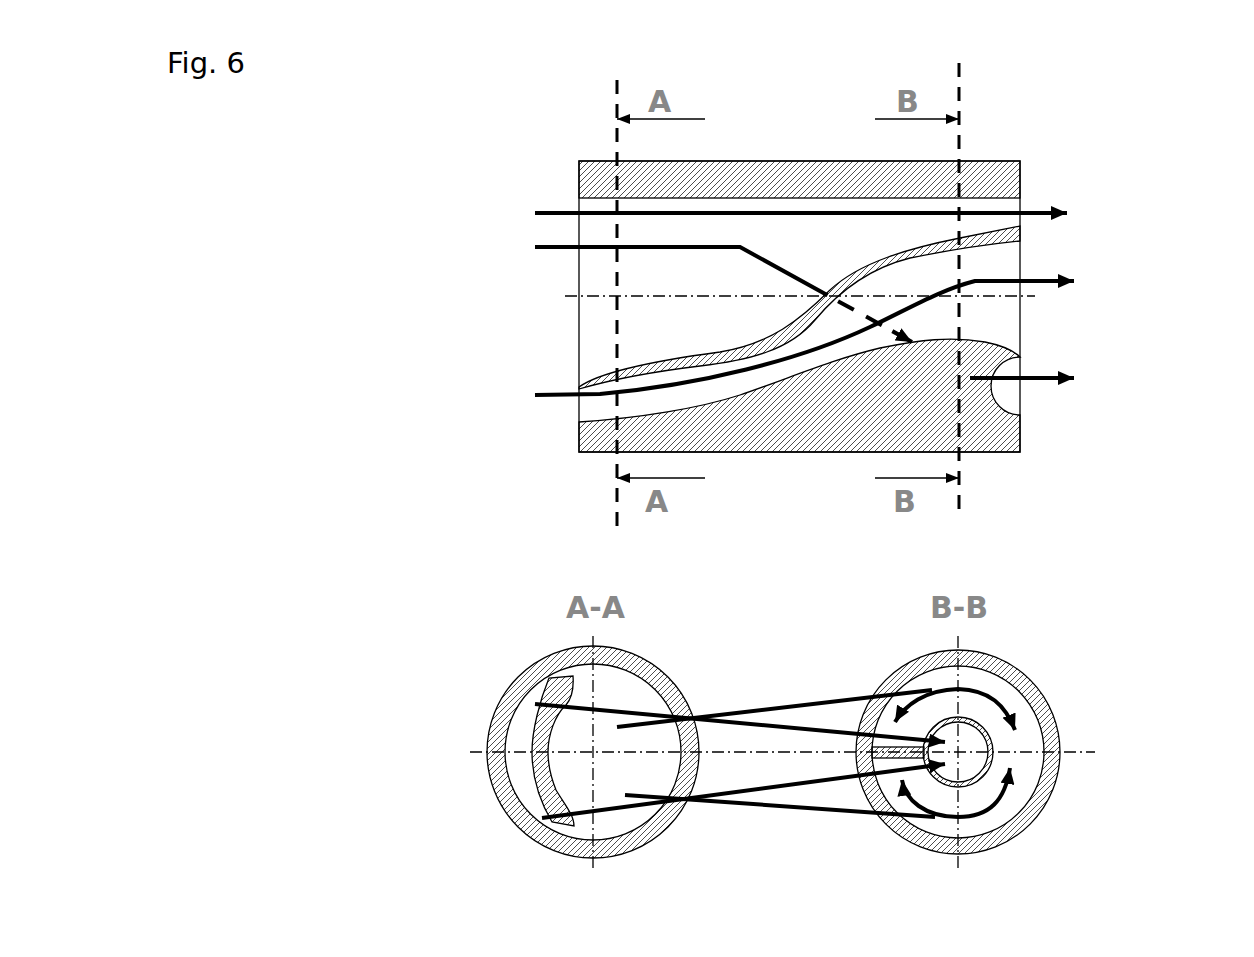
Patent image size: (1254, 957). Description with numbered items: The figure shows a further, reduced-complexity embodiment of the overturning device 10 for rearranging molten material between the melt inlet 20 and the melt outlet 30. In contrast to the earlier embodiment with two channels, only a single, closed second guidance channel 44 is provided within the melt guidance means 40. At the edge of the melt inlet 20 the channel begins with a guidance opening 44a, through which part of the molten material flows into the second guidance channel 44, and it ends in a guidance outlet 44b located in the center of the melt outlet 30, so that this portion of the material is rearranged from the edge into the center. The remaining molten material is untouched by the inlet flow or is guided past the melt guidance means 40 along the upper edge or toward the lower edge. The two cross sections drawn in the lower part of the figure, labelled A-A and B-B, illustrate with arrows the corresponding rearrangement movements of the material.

The overturning device 10 is at (372, 182).
The melt inlet 20 is at (525, 339).
The melt outlet 30 is at (1105, 335).
The melt guidance means 40 is at (821, 232).
The second guidance channel 44 is at (729, 390).
The guidance opening 44a is at (587, 405).
The guidance outlet 44b is at (1005, 268).